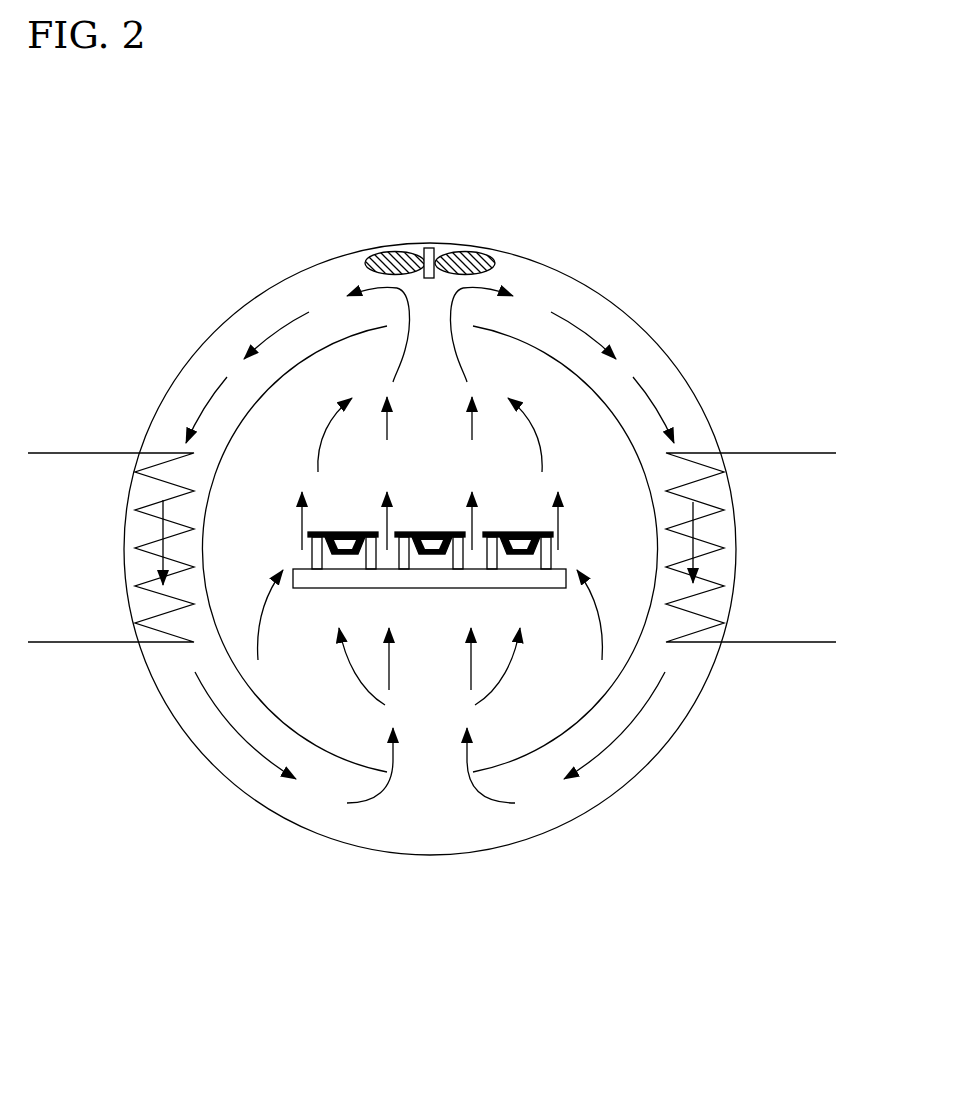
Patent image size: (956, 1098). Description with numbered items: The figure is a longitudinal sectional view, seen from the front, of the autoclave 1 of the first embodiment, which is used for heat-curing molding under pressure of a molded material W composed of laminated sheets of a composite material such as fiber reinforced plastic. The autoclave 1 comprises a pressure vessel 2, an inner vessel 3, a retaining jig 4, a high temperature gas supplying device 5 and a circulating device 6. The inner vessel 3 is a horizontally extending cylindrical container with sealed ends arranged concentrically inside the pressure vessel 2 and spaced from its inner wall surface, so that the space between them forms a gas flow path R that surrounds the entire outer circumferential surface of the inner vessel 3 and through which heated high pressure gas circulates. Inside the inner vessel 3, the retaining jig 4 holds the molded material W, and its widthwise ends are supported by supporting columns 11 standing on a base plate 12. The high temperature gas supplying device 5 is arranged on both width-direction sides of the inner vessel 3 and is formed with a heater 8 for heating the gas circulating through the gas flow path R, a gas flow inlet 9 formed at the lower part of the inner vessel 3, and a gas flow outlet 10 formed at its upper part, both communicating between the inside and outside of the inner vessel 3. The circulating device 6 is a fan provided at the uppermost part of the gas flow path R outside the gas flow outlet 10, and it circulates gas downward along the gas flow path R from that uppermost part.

The autoclave 1 is at (757, 140).
The pressure vessel 2 is at (302, 268).
The inner vessel 3 is at (260, 397).
The retaining jig 4 is at (517, 562).
The high temperature gas supplying device 5 is at (387, 795).
The circulating device 6 is at (397, 252).
The heater 8 is at (78, 452).
The gas flow inlet 9 is at (467, 765).
The gas flow outlet 10 is at (430, 334).
The supporting column 11 is at (548, 561).
The base plate 12 is at (315, 582).
The molded material W is at (548, 532).
The gas flow path R is at (597, 739).